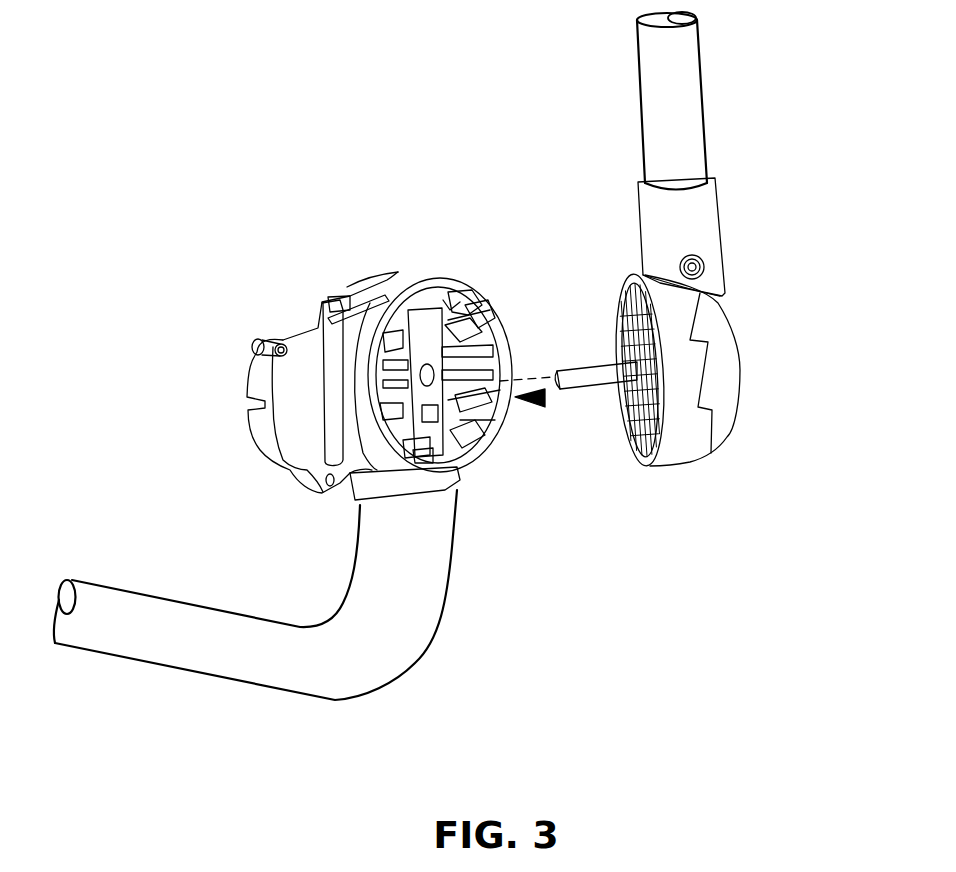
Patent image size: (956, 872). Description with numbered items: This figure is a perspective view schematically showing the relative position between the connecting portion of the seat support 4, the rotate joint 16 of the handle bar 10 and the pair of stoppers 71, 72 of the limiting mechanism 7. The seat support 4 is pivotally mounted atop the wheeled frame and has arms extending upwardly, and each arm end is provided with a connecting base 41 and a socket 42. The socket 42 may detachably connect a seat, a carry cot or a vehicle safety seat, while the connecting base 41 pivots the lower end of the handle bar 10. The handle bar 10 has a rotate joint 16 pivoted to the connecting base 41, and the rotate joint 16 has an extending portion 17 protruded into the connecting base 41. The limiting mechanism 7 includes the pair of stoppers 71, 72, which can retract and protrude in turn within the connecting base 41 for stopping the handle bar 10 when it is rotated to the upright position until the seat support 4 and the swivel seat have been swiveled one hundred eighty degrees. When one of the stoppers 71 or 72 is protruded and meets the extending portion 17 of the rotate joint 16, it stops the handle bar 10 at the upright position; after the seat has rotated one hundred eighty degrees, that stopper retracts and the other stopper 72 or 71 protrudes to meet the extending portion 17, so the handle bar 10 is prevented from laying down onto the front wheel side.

The seat support 4 is at (170, 630).
The limiting mechanism 7 is at (545, 400).
The handle bar 10 is at (647, 78).
The rotate joint 16 is at (740, 383).
The extending portion 17 is at (618, 315).
The connecting base 41 is at (447, 478).
The socket 42 is at (300, 333).
The stopper 71 is at (397, 295).
The stopper 72 is at (470, 313).